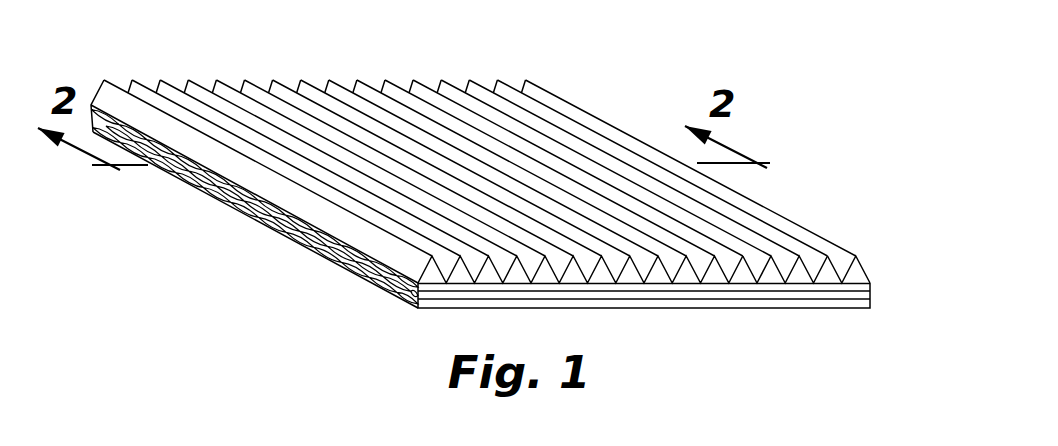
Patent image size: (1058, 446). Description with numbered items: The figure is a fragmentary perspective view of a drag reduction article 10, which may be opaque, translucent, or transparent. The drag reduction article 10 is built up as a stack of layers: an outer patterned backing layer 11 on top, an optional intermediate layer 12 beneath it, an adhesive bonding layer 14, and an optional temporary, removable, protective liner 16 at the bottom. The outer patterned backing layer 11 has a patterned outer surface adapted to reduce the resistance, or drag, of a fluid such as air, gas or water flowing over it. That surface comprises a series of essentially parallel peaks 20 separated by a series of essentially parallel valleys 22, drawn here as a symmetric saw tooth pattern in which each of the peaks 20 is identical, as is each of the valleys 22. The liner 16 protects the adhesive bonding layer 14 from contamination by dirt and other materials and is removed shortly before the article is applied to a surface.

The drag reduction article 10 is at (641, 79).
The outer patterned backing layer 11 is at (856, 274).
The intermediate layer 12 is at (870, 289).
The adhesive bonding layer 14 is at (818, 295).
The temporary liner 16 is at (689, 301).
The peaks 20 is at (555, 94).
The valleys 22 is at (842, 279).